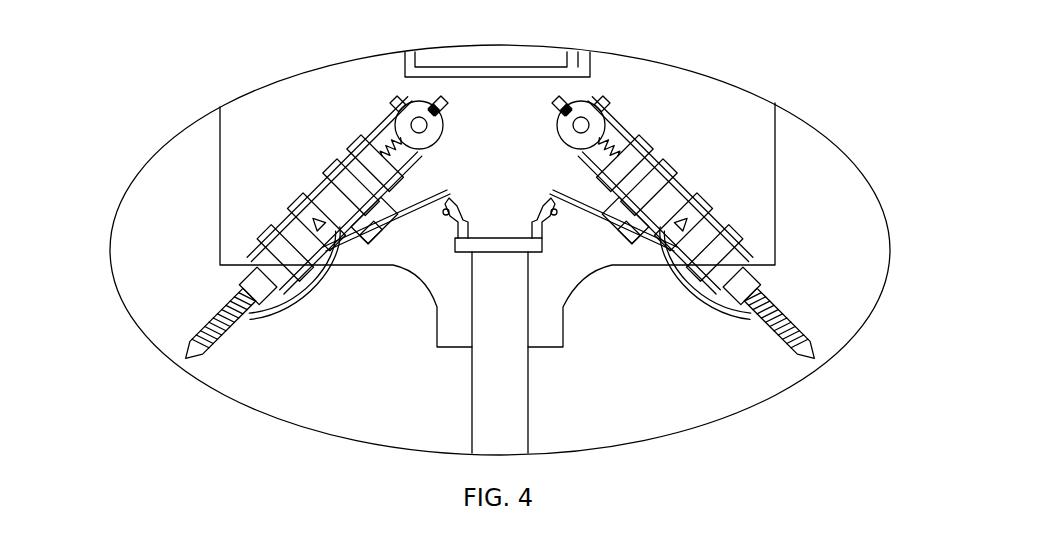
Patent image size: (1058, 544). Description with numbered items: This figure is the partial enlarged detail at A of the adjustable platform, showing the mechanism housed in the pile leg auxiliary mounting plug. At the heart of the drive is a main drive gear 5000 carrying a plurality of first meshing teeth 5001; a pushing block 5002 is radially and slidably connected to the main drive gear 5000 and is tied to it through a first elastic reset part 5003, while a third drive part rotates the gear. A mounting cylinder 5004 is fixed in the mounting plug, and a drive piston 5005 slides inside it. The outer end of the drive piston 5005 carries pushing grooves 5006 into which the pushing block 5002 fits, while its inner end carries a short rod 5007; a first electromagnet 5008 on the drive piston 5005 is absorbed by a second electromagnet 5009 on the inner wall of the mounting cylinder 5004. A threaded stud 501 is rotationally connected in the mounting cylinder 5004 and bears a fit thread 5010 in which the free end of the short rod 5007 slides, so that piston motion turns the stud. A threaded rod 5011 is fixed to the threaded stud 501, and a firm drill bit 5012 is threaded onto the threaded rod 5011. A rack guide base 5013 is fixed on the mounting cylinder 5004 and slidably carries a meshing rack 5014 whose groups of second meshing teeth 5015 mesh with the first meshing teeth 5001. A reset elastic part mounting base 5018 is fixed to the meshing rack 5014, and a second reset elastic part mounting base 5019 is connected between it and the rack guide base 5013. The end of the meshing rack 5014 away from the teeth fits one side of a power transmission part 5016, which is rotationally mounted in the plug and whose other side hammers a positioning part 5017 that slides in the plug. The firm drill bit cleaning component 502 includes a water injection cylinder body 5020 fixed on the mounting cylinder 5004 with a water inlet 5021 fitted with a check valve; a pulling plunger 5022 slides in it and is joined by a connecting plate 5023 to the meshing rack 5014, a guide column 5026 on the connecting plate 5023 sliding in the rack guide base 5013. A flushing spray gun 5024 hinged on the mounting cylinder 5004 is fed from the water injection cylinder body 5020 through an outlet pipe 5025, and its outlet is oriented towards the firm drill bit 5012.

The partial enlarged detail A is at (703, 426).
The threaded stud 501 is at (650, 208).
The firm drill bit cleaning component 502 is at (725, 262).
The main drive gear 5000 is at (572, 117).
The first meshing teeth 5001 is at (585, 100).
The pushing block 5002 is at (565, 102).
The first elastic reset part 5003 is at (571, 119).
The mounting cylinder 5004 is at (770, 280).
The drive piston 5005 is at (678, 163).
The pushing grooves 5006 is at (593, 127).
The short rod 5007 is at (688, 183).
The first electromagnet 5008 is at (665, 153).
The second electromagnet 5009 is at (653, 138).
The fit thread 5010 is at (702, 205).
The threaded rod 5011 is at (715, 235).
The firm drill bit 5012 is at (740, 280).
The rack guide base 5013 is at (328, 170).
The meshing rack 5014 is at (350, 135).
The second meshing teeth 5015 is at (395, 138).
The power transmission part 5016 is at (468, 197).
The positioning part 5017 is at (485, 395).
The reset elastic part mounting base 5018 is at (335, 157).
The second reset elastic part mounting base 5019 is at (345, 138).
The water injection cylinder body 5020 is at (378, 215).
The water inlet 5021 is at (315, 172).
The pulling plunger 5022 is at (370, 202).
The connecting plate 5023 is at (390, 260).
The flushing spray gun 5024 is at (247, 320).
The outlet pipe 5025 is at (230, 280).
The guide column 5026 is at (432, 233).